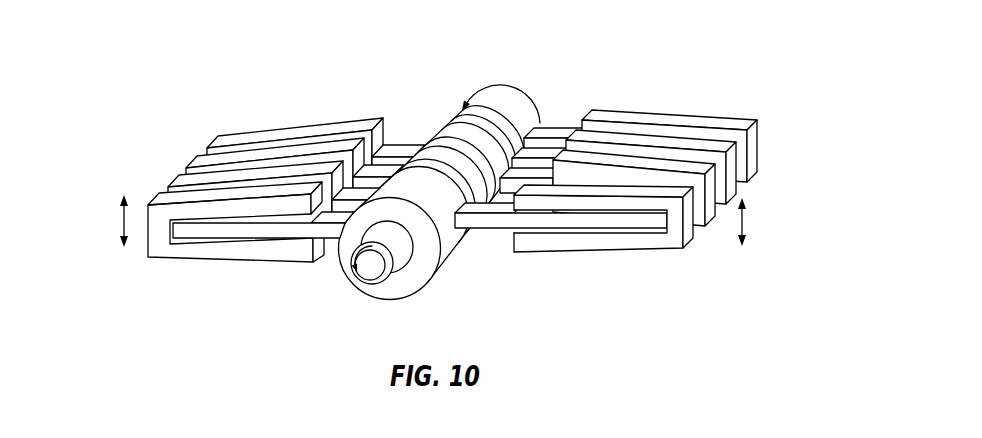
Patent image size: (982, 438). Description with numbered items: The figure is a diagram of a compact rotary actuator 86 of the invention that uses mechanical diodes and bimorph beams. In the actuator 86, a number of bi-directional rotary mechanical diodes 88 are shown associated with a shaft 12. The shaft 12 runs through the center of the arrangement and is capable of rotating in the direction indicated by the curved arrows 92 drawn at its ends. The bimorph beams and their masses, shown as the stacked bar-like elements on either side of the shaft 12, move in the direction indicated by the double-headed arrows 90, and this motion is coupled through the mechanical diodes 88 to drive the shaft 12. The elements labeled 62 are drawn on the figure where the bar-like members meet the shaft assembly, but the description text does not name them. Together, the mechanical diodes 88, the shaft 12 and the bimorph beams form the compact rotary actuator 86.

The compact rotary actuator 86 is at (437, 178).
The shaft 12 is at (392, 282).
The guide bars 62 is at (452, 186).
The bi-directional rotary mechanical diodes 88 is at (487, 218).
The arrows 90 is at (433, 221).
The arrows 92 is at (456, 186).